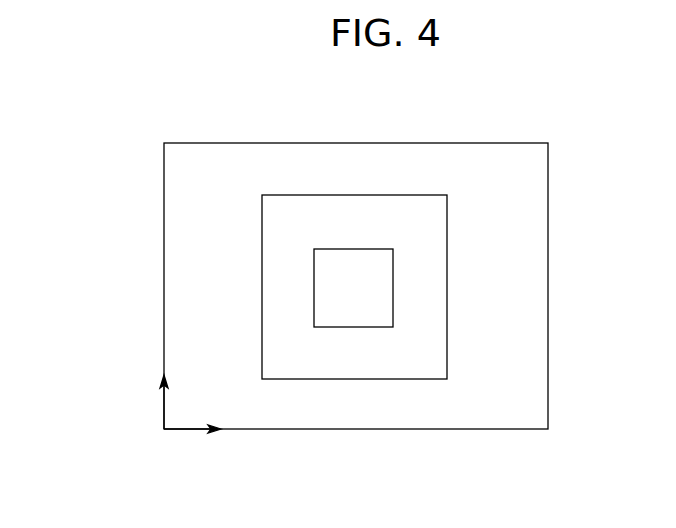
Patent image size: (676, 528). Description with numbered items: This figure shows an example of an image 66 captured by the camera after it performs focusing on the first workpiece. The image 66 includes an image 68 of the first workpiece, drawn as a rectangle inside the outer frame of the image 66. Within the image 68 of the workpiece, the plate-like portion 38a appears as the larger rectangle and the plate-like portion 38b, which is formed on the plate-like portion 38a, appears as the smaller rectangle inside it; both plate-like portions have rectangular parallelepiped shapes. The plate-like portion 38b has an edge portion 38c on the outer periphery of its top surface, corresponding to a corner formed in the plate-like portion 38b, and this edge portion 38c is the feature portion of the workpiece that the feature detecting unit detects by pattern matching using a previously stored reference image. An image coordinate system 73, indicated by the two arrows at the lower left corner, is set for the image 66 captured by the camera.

The image 66 is at (489, 143).
The image of the first workpiece 68 is at (305, 195).
The plate-like portion 38a is at (309, 357).
The plate-like portion 38b is at (369, 313).
The edge portion 38c is at (393, 281).
The image coordinate system 73 is at (190, 433).